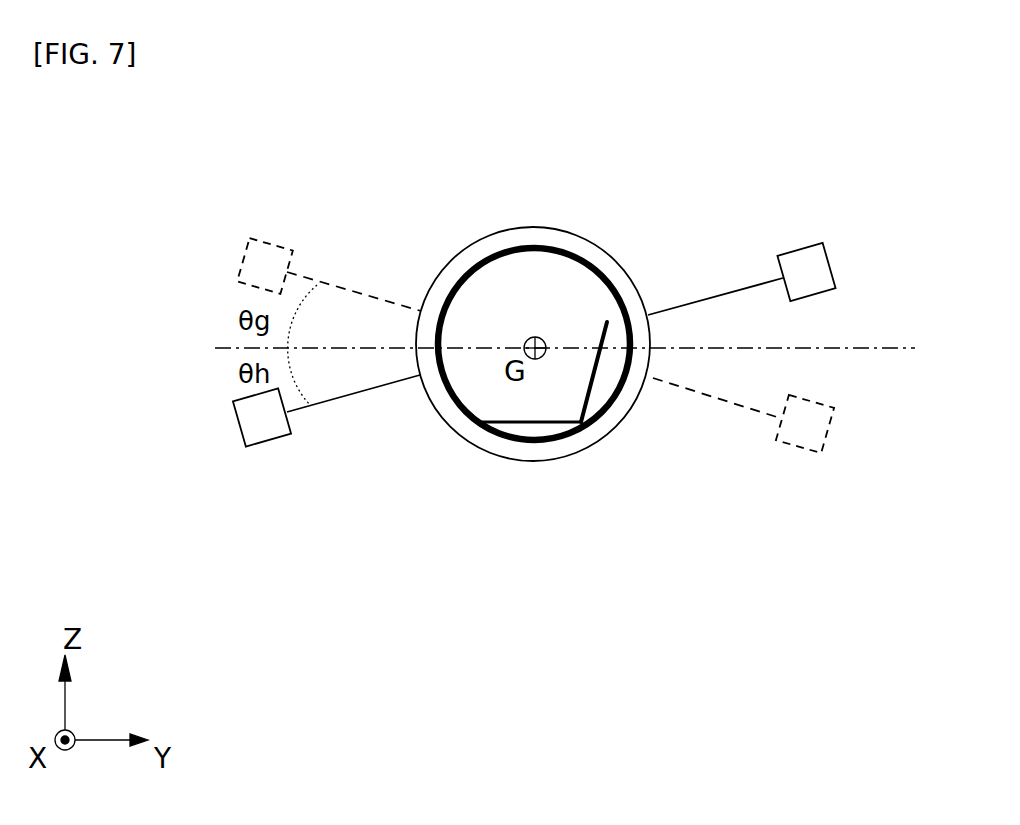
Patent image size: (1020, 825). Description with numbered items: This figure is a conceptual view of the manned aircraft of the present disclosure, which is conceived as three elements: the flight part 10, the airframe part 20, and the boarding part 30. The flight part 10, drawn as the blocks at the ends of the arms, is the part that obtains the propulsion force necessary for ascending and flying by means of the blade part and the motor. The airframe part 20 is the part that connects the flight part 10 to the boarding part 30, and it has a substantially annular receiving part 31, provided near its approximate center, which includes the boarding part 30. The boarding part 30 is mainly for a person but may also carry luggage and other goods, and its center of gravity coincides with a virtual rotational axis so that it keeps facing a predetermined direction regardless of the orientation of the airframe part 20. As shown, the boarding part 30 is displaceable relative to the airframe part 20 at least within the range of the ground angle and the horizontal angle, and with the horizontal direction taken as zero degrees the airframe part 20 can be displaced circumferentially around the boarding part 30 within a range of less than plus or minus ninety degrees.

The flight part 10 is at (247, 240).
The airframe part 20 is at (355, 287).
The boarding part 30 is at (577, 257).
The receiving part 31 is at (507, 232).